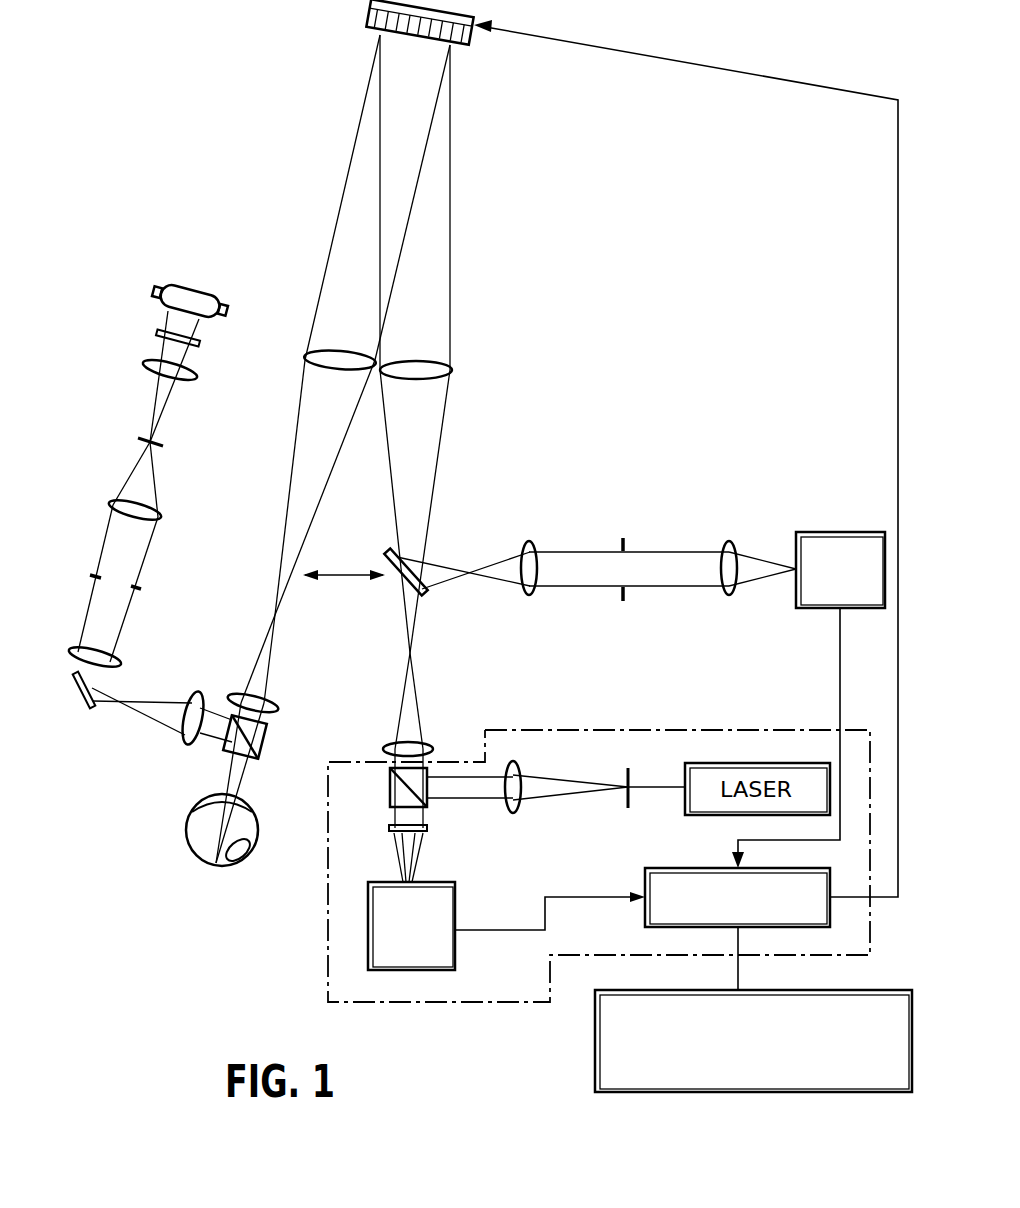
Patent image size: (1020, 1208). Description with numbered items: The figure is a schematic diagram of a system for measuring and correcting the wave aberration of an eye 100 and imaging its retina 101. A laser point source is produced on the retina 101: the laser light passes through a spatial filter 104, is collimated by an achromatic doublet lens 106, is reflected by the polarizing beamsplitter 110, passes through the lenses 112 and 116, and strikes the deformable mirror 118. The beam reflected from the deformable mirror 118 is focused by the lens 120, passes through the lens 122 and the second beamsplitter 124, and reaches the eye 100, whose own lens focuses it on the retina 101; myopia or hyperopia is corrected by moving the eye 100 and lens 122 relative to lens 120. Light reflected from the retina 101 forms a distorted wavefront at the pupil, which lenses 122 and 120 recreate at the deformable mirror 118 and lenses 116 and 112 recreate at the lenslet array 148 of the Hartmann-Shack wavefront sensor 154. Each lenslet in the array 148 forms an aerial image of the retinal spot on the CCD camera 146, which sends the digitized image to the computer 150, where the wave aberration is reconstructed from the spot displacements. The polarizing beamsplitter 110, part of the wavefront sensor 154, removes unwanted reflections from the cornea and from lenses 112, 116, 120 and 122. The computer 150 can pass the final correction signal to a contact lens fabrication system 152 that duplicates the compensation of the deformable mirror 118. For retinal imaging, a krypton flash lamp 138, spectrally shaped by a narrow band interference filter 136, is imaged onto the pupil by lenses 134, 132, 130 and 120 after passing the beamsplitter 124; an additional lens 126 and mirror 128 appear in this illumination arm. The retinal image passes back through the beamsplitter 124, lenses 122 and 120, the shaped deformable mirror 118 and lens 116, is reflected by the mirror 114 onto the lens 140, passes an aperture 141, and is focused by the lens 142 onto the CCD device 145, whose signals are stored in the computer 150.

The eye 100 is at (178, 850).
The retina 101 is at (252, 846).
The spatial filter 104 is at (626, 800).
The achromatic doublet lens 106 is at (518, 770).
The polarizing beamsplitter 110 is at (388, 790).
The lens 112 is at (430, 745).
The mirror 114 is at (392, 551).
The lens 116 is at (453, 372).
The deformable mirror 118 is at (470, 38).
The lens 120 is at (342, 351).
The lens 122 is at (280, 701).
The second beamsplitter 124 is at (265, 742).
The lens 126 is at (182, 742).
The mirror 128 is at (77, 711).
The lens 130 is at (118, 659).
The lens 132 is at (160, 518).
The lens 134 is at (142, 367).
The narrow band interference filter 136 is at (202, 343).
The krypton flash lamp 138 is at (216, 297).
The lens 140 is at (528, 546).
The aperture 141 is at (622, 545).
The lens 142 is at (730, 546).
The CCD device 145 is at (822, 532).
The CCD camera 146 is at (380, 882).
The lenslet array 148 is at (430, 830).
The computer 150 is at (672, 868).
The contact lens fabrication system 152 is at (640, 1092).
The wavefront sensor 154 is at (642, 730).